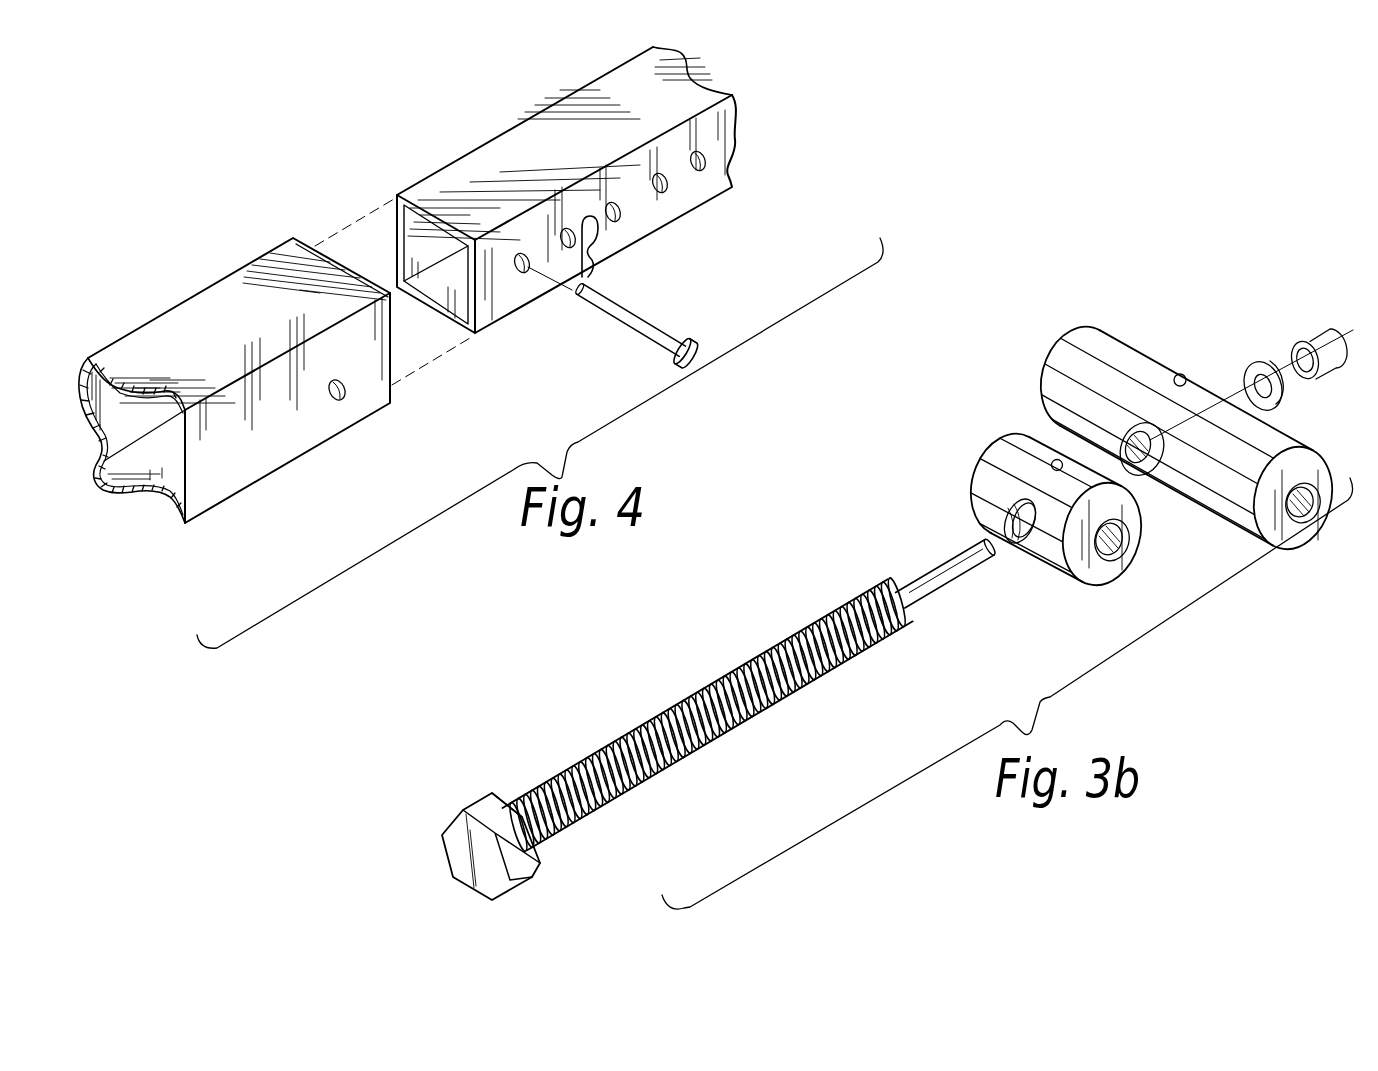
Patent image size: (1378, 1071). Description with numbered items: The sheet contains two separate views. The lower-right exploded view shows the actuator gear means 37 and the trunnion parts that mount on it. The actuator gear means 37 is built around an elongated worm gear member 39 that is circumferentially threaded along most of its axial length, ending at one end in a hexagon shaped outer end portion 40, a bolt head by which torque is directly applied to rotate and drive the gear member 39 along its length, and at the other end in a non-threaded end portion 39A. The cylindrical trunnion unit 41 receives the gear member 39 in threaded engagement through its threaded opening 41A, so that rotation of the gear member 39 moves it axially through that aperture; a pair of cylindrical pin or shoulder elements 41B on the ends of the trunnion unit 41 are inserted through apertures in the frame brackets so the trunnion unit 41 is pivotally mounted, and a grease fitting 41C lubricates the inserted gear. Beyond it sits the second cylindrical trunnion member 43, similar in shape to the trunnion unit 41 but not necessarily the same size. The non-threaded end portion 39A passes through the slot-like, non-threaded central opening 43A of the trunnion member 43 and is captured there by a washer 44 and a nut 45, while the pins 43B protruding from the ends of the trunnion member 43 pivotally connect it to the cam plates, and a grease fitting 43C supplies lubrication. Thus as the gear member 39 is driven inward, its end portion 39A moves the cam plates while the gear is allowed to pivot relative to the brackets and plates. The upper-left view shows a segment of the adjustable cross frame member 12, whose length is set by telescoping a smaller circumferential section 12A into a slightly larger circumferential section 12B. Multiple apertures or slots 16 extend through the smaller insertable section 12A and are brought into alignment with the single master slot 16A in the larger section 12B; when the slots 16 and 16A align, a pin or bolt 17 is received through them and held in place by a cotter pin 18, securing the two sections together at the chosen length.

In FIG. 4, the cross frame member 12 is at (225, 308).
In FIG. 4, the smaller circumferential section 12A is at (450, 178).
In FIG. 4, the larger circumferential section 12B is at (155, 338).
In FIG. 4, the apertures or slots 16 is at (577, 209).
In FIG. 4, the master slot 16A is at (350, 393).
In FIG. 4, the pin or bolt 17 is at (644, 328).
In FIG. 4, the cotter pin 18 is at (597, 212).
In FIG. 3B, the actuator gear means 37 is at (576, 742).
In FIG. 3B, the worm gear member 39 is at (713, 680).
In FIG. 3B, the non-threaded end portion 39A is at (935, 575).
In FIG. 3B, the hexagon shaped outer end portion 40 is at (486, 806).
In FIG. 3B, the cylindrical trunnion unit 41 is at (1007, 463).
In FIG. 3B, the threaded opening 41A is at (1003, 514).
In FIG. 3B, the pin or shoulder elements 41B is at (1127, 553).
In FIG. 3B, the grease fitting 41C is at (1055, 460).
In FIG. 3B, the cylindrical trunnion member 43 is at (1122, 342).
In FIG. 3B, the central opening 43A is at (1133, 463).
In FIG. 3B, the pins 43B is at (1314, 520).
In FIG. 3B, the grease fitting 43C is at (1180, 372).
In FIG. 3B, the washer 44 is at (1253, 367).
In FIG. 3B, the nut 45 is at (1307, 338).